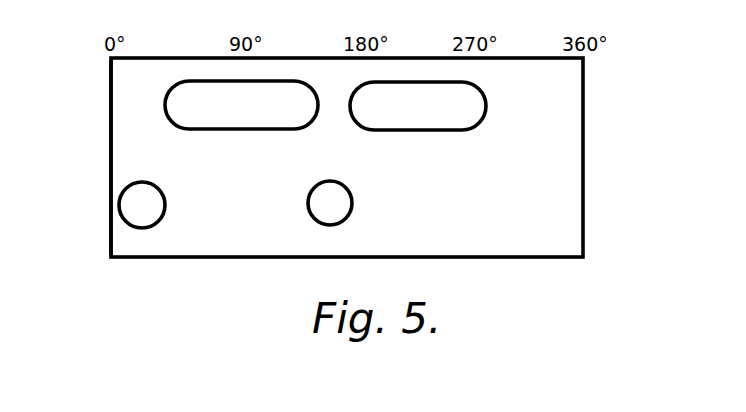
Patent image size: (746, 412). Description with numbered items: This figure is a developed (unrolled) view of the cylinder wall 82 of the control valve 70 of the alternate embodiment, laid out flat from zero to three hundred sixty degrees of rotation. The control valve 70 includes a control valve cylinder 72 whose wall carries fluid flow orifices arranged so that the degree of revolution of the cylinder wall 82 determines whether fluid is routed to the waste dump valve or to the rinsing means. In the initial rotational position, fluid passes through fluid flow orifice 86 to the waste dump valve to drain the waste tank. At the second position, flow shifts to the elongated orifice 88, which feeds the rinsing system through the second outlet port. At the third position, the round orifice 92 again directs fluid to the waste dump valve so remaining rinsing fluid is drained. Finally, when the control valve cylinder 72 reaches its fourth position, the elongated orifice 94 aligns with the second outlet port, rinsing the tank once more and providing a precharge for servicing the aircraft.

The control valve 70 is at (585, 174).
The control valve cylinder 72 is at (111, 162).
The cylinder wall 82 is at (519, 220).
The fluid flow orifice 86 is at (152, 202).
The orifice 88 is at (212, 125).
The orifice 92 is at (342, 208).
The orifice 94 is at (397, 125).